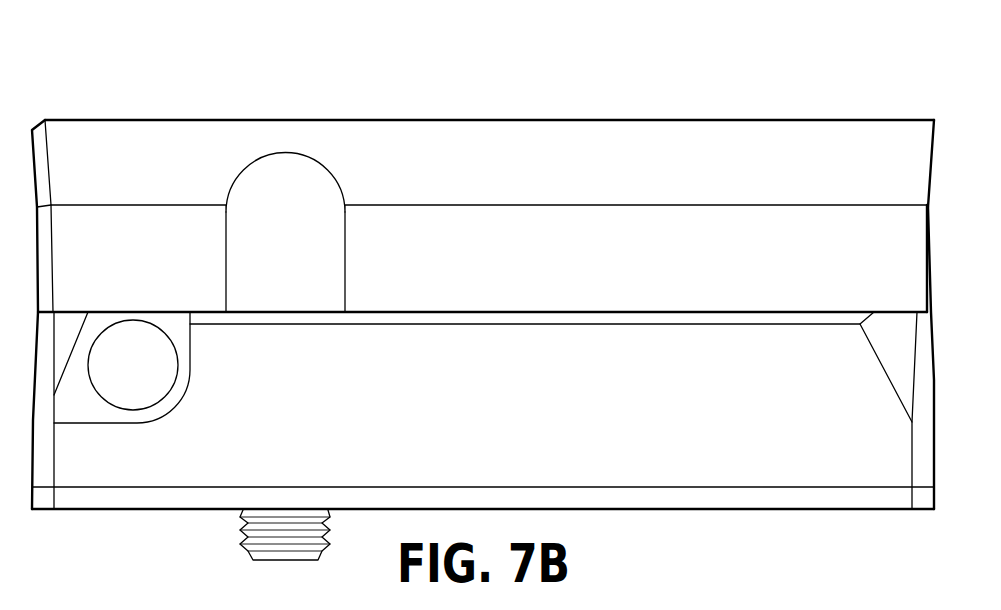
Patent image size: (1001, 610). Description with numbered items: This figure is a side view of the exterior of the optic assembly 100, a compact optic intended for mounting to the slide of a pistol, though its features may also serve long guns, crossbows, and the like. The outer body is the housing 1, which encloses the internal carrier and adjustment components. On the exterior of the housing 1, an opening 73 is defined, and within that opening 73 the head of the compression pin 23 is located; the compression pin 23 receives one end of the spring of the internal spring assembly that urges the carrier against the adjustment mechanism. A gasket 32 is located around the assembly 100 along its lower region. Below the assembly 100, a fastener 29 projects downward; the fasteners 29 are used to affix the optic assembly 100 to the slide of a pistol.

The optic assembly 100 is at (643, 93).
The housing 1 is at (275, 120).
The compression pin 23 is at (133, 340).
The opening 73 is at (178, 348).
The fastener 29 is at (275, 558).
The gasket 32 is at (672, 510).